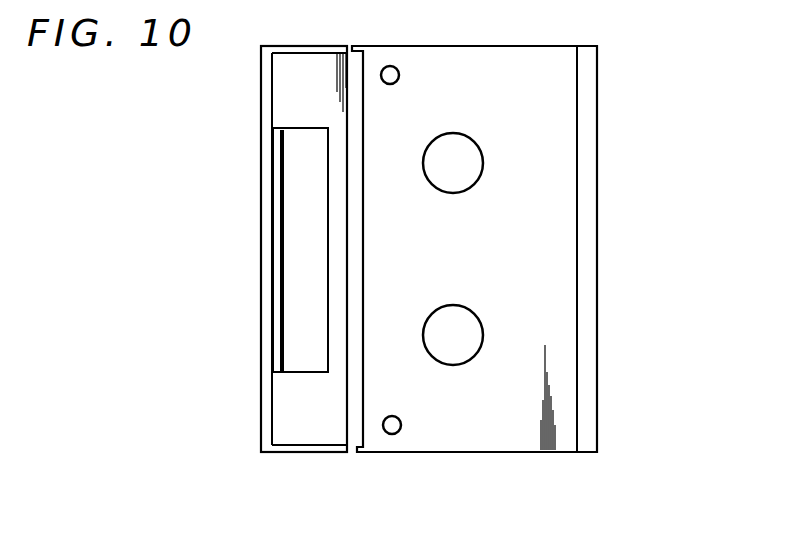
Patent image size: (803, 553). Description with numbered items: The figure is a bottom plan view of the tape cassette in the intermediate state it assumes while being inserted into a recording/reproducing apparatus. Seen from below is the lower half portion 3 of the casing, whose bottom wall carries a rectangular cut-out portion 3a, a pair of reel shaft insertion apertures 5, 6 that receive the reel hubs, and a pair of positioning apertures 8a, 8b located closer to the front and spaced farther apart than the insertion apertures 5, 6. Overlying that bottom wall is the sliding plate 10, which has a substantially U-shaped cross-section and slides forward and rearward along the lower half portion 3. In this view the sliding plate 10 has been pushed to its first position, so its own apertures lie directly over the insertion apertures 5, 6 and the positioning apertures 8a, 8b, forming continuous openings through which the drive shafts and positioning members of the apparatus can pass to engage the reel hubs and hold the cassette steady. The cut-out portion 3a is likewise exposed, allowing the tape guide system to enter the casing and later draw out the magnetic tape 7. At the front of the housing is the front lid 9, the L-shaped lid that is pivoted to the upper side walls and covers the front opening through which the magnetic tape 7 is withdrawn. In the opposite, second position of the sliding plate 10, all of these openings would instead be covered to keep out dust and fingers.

The sliding plate 10 is at (465, 484).
The lower half portion 3 is at (598, 258).
The cut-out portion 3a is at (328, 243).
The front lid 9 is at (261, 258).
The magnetic tape 7 is at (283, 305).
The reel shaft insertion aperture 6 is at (480, 180).
The reel shaft insertion aperture 5 is at (480, 351).
The positioning aperture 8b is at (398, 78).
The positioning aperture 8a is at (400, 428).